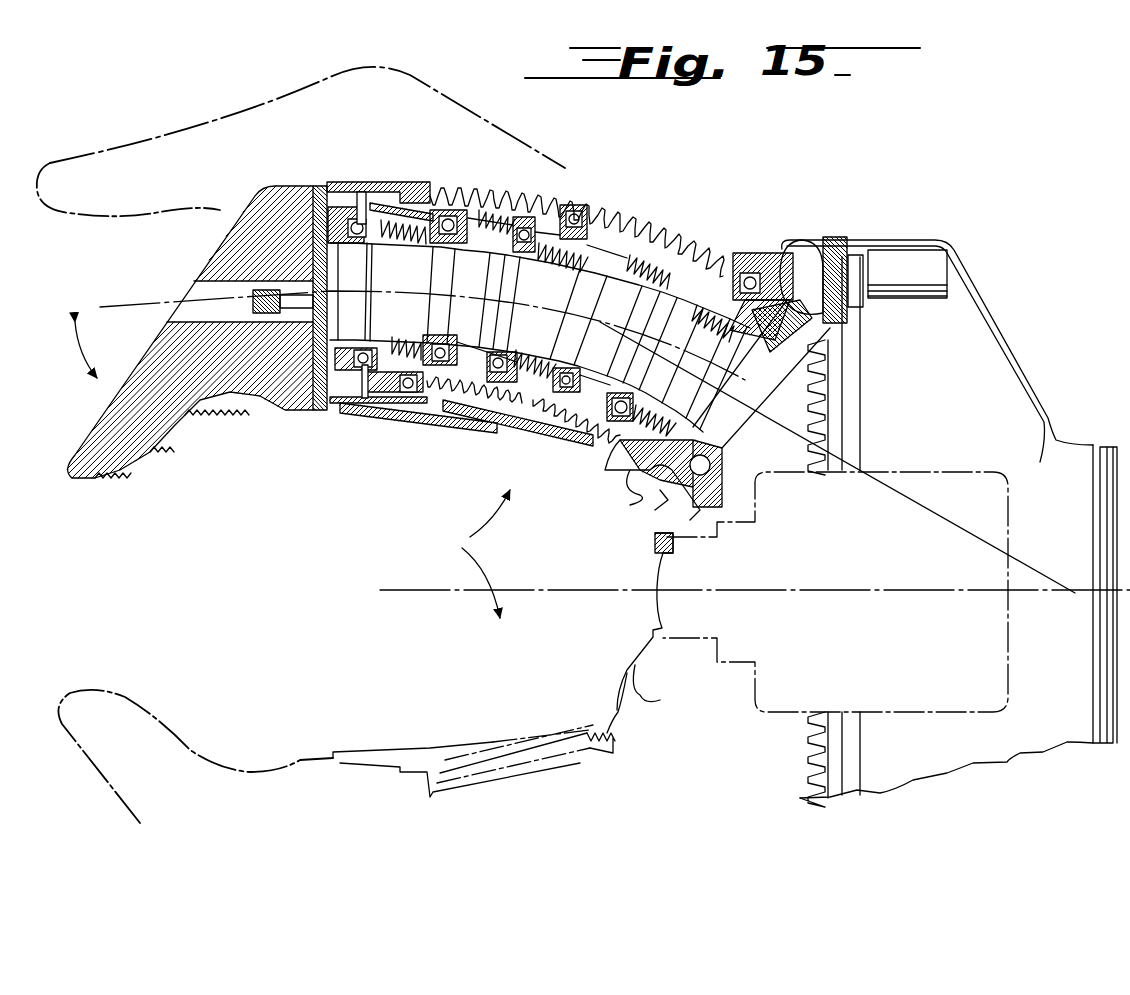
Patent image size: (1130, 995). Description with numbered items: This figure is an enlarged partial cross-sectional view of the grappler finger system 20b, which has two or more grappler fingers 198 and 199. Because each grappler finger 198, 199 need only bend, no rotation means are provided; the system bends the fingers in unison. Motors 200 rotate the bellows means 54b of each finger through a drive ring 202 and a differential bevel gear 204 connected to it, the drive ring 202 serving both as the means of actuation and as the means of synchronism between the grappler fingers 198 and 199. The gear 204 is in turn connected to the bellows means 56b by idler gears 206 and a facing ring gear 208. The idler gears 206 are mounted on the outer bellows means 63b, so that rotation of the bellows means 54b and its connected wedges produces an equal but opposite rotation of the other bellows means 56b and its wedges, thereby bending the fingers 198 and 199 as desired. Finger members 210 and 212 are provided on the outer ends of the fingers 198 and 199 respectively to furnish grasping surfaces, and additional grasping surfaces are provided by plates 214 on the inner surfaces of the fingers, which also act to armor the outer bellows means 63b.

The idler gears 206 is at (368, 185).
The outer bellows means 63b is at (600, 213).
The bellows means 56b is at (665, 255).
The facing ring gear 208 is at (730, 268).
The differential bevel gear 204 is at (837, 236).
The motors 200 is at (920, 262).
The drive ring 202 is at (855, 355).
The bellows means 54b is at (600, 440).
The finger member 210 is at (157, 445).
The grappler finger 198 is at (315, 412).
The plates 214 is at (527, 435).
The grappler finger system 20b is at (464, 554).
The finger member 212 is at (130, 703).
The grappler finger 199 is at (288, 760).